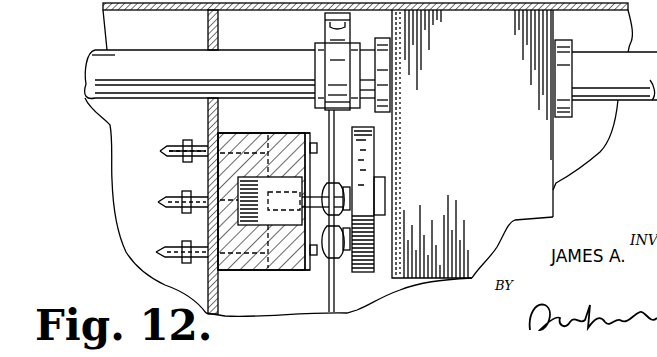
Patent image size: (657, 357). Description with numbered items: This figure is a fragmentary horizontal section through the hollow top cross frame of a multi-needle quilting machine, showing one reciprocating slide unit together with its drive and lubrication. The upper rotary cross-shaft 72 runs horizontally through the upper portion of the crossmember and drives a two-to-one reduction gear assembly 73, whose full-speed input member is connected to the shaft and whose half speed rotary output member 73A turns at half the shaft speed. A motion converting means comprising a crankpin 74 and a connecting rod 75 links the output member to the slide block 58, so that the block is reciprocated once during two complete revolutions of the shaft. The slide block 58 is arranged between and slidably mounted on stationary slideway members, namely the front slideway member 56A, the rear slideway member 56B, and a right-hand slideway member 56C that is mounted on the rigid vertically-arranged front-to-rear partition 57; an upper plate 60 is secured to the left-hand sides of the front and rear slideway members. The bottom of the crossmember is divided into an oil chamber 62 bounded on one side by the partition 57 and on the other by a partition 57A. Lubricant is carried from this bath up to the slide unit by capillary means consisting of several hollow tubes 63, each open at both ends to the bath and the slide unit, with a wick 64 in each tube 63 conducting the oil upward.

The upper rotary cross-shaft 72 is at (243, 67).
The partition 57 is at (208, 118).
The partition 57A is at (328, 303).
The hollow tube 63 is at (182, 143).
The wick 64 is at (160, 152).
The front slideway member 56A is at (253, 263).
The rear slideway member 56B is at (262, 137).
The right-hand slideway member 56C is at (208, 182).
The slide block 58 is at (272, 224).
The upper plate 60 is at (315, 265).
The oil chamber 62 is at (145, 235).
The reduction gear assembly 73 is at (472, 130).
The half speed rotary output member 73A is at (362, 163).
The crankpin 74 is at (343, 253).
The connecting rod 75 is at (337, 212).